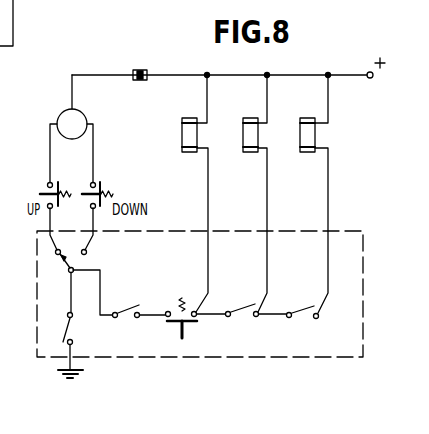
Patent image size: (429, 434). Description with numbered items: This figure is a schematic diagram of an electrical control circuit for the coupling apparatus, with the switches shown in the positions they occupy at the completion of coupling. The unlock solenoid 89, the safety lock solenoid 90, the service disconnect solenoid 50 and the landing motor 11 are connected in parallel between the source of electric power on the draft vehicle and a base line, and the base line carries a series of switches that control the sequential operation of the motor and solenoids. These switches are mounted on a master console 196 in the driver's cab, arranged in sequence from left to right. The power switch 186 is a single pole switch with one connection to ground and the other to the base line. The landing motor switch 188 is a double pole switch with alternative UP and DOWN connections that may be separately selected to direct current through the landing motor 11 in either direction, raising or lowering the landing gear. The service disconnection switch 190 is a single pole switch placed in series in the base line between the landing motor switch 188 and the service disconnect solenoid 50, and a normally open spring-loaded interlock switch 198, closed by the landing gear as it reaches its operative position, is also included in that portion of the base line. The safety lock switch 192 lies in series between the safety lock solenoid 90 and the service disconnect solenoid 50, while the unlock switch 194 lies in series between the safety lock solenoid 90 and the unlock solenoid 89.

The landing motor 11 is at (84, 113).
The service disconnect solenoid 50 is at (190, 117).
The safety lock solenoid 90 is at (250, 117).
The unlock solenoid 89 is at (308, 117).
The power switch 186 is at (68, 328).
The landing motor switch 188 is at (80, 258).
The service disconnection switch 190 is at (128, 306).
The safety lock switch 192 is at (240, 303).
The unlock switch 194 is at (304, 305).
The master console 196 is at (217, 294).
The interlock switch 198 is at (190, 304).